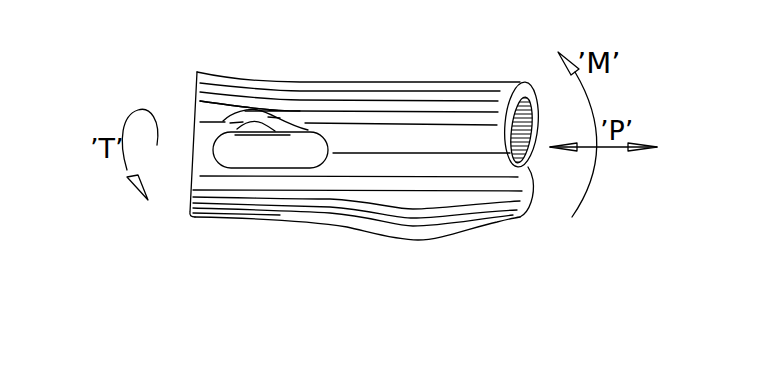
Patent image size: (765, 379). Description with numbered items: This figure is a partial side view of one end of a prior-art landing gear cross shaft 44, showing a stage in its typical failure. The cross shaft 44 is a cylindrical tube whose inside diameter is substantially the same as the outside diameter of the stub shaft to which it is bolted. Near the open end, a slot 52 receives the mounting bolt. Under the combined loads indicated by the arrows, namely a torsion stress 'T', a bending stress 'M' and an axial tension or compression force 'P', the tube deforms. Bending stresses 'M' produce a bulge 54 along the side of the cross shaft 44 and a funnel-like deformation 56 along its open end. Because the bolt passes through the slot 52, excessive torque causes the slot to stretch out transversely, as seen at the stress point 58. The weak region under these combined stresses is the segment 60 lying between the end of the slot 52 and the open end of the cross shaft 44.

The cross shaft 44 is at (452, 82).
The slot 52 is at (312, 130).
The bulge 54 is at (447, 237).
The funnel-like deformation 56 is at (197, 72).
The stress point 58 is at (261, 125).
The segment 60 is at (207, 153).